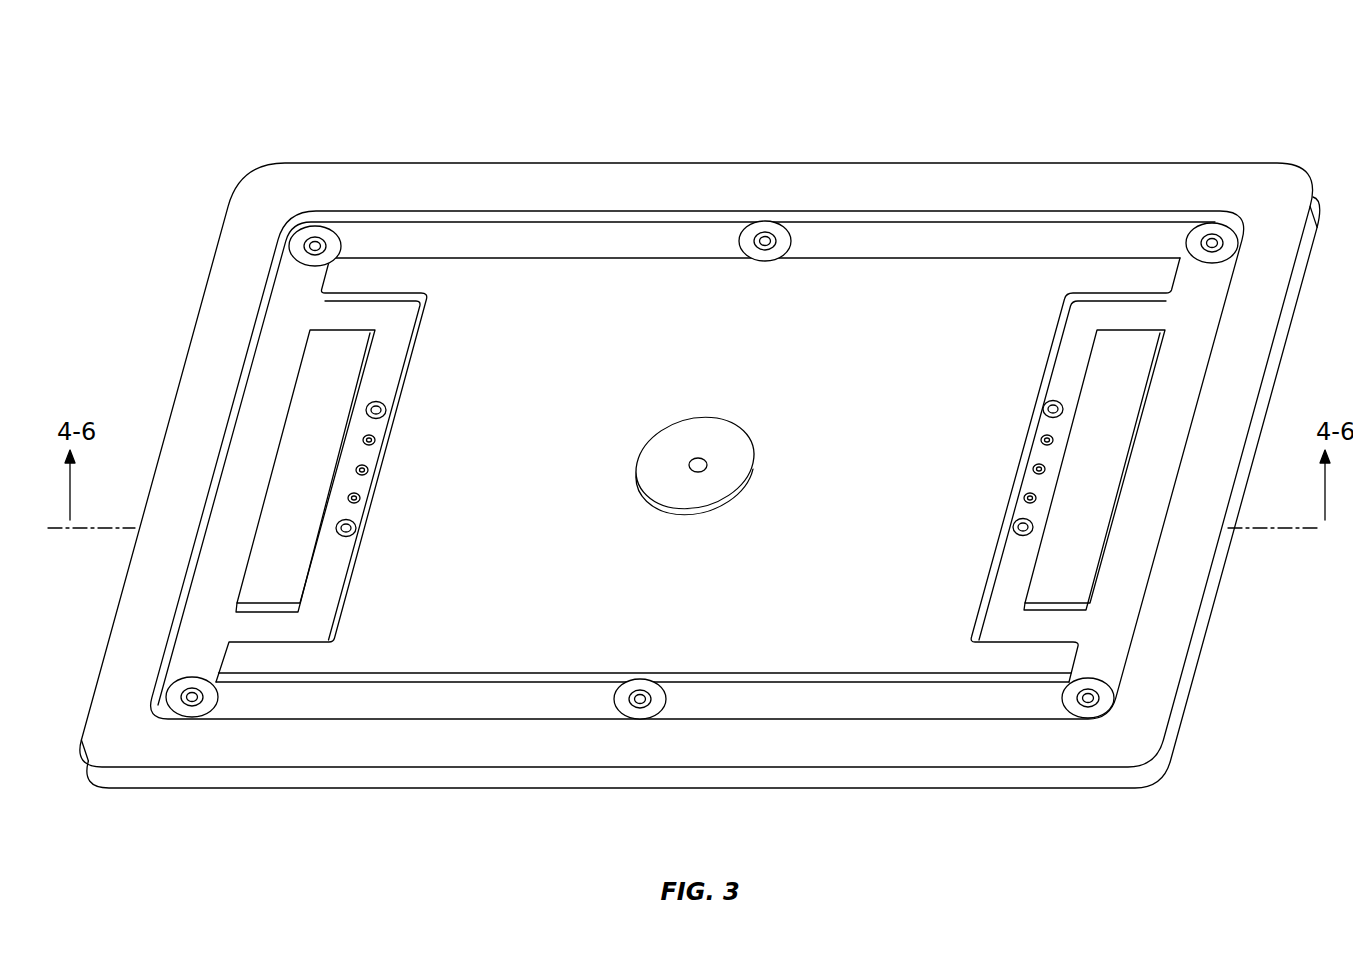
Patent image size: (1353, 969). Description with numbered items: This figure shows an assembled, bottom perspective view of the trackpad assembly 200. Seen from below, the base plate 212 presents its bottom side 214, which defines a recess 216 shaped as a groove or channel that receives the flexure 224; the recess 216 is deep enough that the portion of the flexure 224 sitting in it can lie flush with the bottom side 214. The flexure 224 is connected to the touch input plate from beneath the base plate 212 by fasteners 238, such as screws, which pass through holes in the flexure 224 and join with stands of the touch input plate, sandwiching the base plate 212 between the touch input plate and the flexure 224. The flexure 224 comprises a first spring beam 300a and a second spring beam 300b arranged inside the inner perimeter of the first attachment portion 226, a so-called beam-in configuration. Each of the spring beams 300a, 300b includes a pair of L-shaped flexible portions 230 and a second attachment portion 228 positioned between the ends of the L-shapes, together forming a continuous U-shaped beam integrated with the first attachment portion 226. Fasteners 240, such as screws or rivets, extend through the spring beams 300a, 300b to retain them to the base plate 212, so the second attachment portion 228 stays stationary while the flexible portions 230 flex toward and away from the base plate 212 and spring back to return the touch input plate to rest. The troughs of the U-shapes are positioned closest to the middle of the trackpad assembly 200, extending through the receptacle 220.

The trackpad assembly 200 is at (305, 87).
The base plate 212 is at (858, 185).
The bottom side 214 is at (600, 290).
The recess 216 is at (1093, 238).
The receptacle 220 is at (725, 420).
The flexure 224 is at (947, 237).
The first attachment portion 226 is at (490, 240).
The second attachment portion 228 is at (386, 471).
The flexible portions 230 is at (400, 350).
The fasteners 238 is at (306, 240).
The fasteners 240 is at (386, 414).
The first spring beam 300a is at (513, 403).
The second spring beam 300b is at (992, 429).